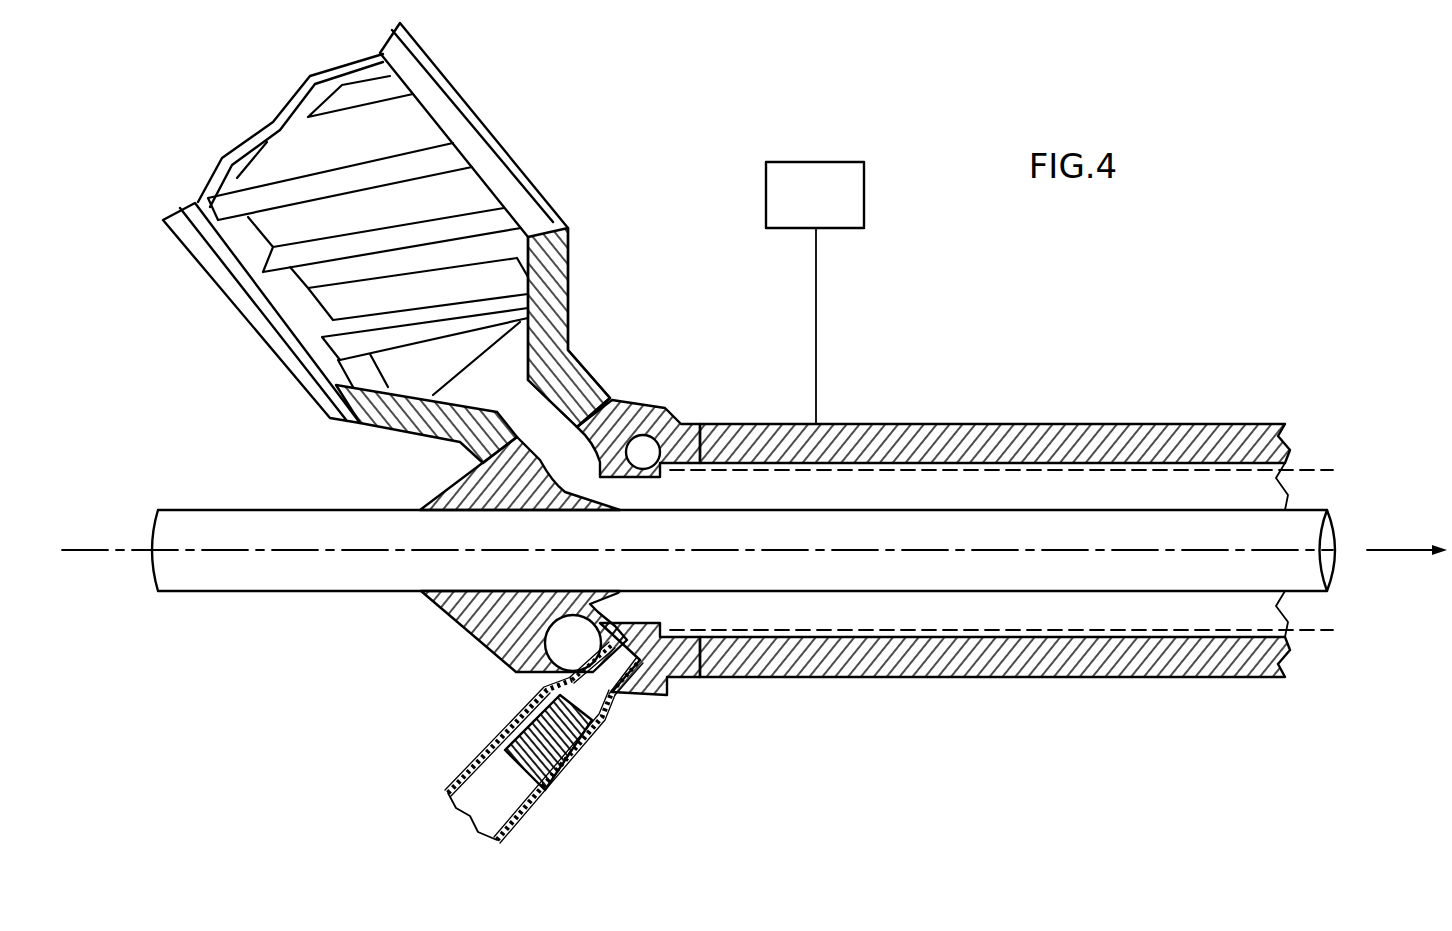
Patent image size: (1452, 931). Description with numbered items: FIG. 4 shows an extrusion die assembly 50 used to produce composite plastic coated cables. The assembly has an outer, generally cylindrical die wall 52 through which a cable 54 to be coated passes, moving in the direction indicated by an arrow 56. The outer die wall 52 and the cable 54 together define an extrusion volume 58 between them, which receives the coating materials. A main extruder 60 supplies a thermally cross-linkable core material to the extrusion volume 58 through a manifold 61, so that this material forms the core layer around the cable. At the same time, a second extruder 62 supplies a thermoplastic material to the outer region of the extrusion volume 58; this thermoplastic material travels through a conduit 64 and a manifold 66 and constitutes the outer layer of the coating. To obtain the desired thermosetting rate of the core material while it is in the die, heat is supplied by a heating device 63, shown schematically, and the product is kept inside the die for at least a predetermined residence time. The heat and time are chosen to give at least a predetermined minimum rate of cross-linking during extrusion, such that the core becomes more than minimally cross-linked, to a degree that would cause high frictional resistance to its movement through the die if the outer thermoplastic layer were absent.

The extrusion die assembly 50 is at (1078, 362).
The outer die wall 52 is at (1080, 423).
The cable 54 is at (1303, 517).
The arrow 56 is at (1382, 553).
The extrusion volume 58 is at (814, 490).
The main extruder 60 is at (497, 280).
The manifold 61 is at (573, 467).
The second extruder 62 is at (563, 757).
The heating device 63 is at (864, 200).
The conduit 64 is at (605, 686).
The manifold 66 is at (647, 650).